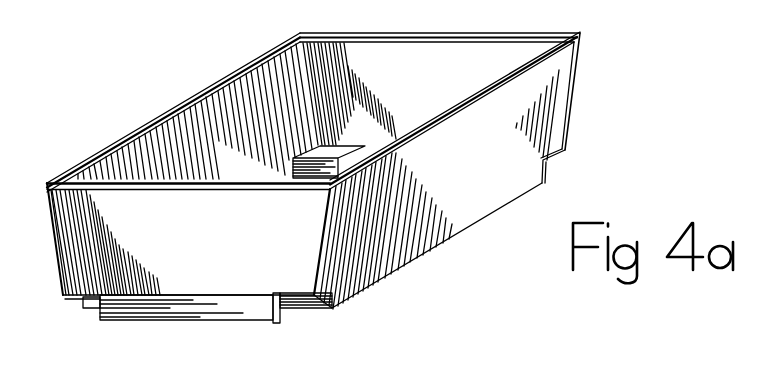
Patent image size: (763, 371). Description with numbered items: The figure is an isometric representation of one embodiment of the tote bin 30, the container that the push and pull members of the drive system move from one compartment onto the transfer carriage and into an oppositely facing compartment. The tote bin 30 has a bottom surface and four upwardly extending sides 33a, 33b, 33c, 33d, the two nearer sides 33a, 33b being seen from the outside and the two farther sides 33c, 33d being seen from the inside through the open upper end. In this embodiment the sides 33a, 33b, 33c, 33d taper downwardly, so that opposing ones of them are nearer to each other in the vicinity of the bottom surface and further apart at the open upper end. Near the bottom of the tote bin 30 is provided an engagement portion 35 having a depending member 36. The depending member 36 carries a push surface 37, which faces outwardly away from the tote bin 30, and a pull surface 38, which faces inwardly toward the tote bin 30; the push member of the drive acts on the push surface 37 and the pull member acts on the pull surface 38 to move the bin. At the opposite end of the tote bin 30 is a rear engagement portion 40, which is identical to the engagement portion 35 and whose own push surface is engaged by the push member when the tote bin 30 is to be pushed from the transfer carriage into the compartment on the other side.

The tote bin 30 is at (315, 157).
The side 33a is at (450, 223).
The side 33b is at (115, 229).
The side 33c is at (220, 113).
The side 33d is at (425, 60).
The engagement portion 35 is at (320, 312).
The depending member 36 is at (175, 308).
The push surface 37 is at (223, 310).
The pull surface 38 is at (277, 318).
The rear engagement portion 40 is at (551, 167).